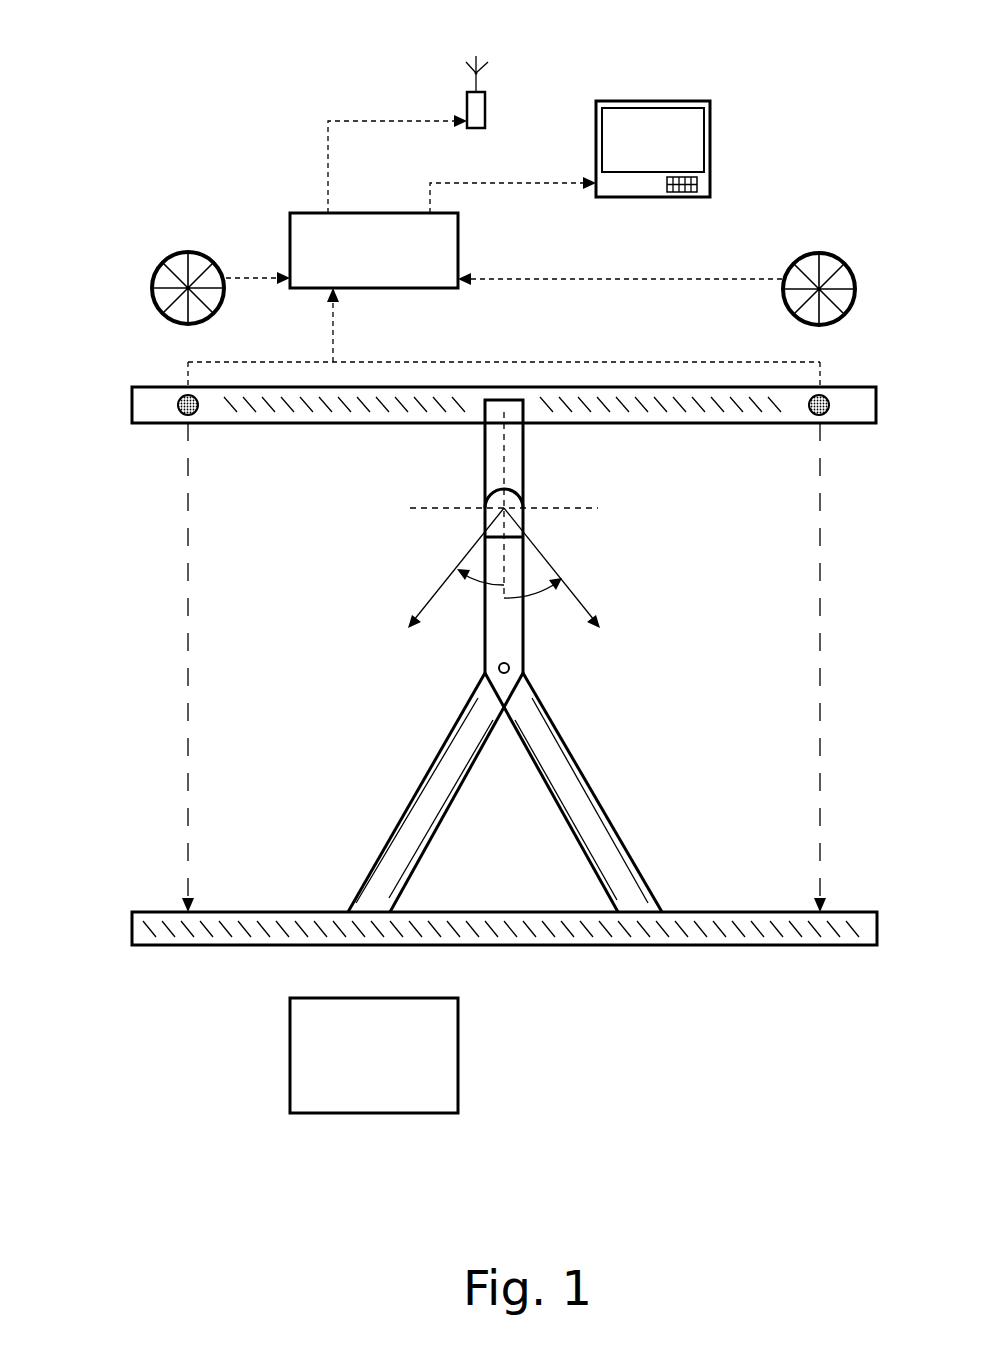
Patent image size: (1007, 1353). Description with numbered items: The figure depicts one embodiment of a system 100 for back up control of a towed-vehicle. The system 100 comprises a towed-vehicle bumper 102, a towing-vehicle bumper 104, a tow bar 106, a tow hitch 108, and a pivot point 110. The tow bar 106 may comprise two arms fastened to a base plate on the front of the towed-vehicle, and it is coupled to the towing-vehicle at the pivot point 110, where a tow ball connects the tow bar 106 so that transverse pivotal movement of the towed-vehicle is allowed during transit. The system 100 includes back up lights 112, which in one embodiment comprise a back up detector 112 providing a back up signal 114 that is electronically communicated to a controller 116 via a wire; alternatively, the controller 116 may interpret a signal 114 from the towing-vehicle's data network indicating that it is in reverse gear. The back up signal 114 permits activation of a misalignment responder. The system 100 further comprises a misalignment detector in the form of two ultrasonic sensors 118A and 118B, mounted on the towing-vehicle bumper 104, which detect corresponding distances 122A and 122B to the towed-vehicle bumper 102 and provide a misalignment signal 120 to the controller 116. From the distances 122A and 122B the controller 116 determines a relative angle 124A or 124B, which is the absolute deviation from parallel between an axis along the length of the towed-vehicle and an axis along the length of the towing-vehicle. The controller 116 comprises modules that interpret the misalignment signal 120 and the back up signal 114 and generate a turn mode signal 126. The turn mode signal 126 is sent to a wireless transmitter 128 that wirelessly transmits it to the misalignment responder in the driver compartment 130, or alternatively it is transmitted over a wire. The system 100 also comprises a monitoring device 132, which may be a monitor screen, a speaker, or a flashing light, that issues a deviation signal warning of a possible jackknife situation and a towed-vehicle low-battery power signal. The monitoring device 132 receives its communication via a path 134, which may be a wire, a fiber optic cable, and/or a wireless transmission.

The system for back up control of a towed-vehicle 100 is at (122, 65).
The towed-vehicle bumper 102 is at (716, 947).
The towing-vehicle bumper 104 is at (715, 424).
The tow bar 106 is at (497, 638).
The tow hitch 108 is at (485, 456).
The pivot point 110 is at (520, 484).
The back up lights / back up detector 112 is at (152, 288).
The back up signal 114 is at (246, 275).
The controller 116 is at (374, 250).
The ultrasonic sensor 118A is at (176, 412).
The ultrasonic sensor 118B is at (830, 405).
The misalignment signal 120 is at (524, 360).
The distance 122A is at (190, 633).
The distance 122B is at (818, 633).
The relative angle 124A is at (448, 598).
The relative angle 124B is at (540, 600).
The turn mode signal 126 is at (361, 120).
The wireless transmitter 128 is at (488, 107).
The driver compartment 130 is at (374, 1055).
The monitoring device 132 is at (712, 117).
The path 134 is at (530, 190).